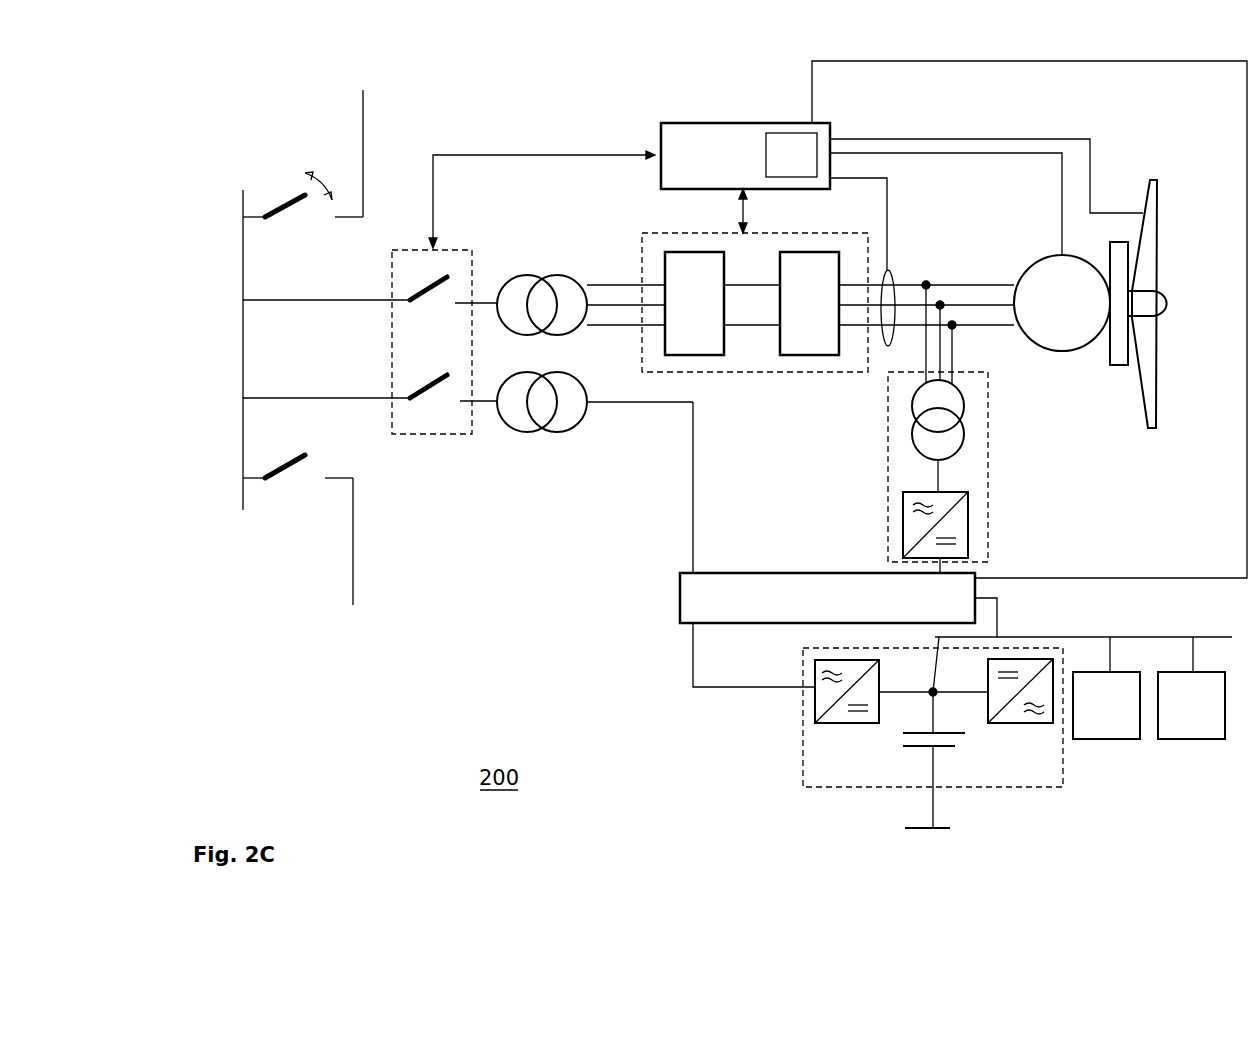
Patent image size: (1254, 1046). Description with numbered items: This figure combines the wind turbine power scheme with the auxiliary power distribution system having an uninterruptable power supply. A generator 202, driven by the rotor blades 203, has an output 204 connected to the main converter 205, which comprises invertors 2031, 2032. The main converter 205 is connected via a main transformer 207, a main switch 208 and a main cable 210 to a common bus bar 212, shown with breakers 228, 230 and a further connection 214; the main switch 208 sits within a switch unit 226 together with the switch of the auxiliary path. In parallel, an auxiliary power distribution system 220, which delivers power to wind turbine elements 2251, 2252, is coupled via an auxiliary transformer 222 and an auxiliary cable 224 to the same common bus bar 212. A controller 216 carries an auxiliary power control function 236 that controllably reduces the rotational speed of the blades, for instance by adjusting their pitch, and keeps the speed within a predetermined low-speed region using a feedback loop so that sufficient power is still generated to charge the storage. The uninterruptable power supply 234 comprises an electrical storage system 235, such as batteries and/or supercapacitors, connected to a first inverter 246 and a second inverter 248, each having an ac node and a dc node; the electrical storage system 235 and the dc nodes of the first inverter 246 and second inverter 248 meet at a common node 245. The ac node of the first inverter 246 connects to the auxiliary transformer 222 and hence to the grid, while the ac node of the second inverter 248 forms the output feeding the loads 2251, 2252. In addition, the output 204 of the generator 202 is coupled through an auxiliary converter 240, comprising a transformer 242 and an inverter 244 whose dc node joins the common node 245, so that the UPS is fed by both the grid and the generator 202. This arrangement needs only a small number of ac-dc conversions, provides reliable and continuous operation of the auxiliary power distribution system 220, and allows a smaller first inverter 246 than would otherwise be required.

The generator 202 is at (1062, 303).
The propeller 203 is at (1163, 304).
The invertor 2031 is at (694, 303).
The invertor 2032 is at (781, 303).
The output 204 is at (920, 342).
The main converter 205 is at (755, 319).
The main transformer 207 is at (581, 288).
The main switch 208 is at (418, 280).
The main cable 210 is at (326, 315).
The bus bar 212 is at (210, 350).
The connection line 214 is at (362, 555).
The controller 216 is at (745, 156).
The auxiliary power distribution system 220 is at (838, 605).
The auxiliary transformer 222 is at (595, 472).
The auxiliary cable 224 is at (326, 383).
The wind turbine element 2251 is at (1106, 688).
The wind turbine element 2252 is at (1191, 688).
The switch unit 226 is at (432, 408).
The first breaker 228 is at (303, 153).
The second breaker 230 is at (277, 493).
The uninterruptable power supply 234 is at (803, 787).
The electrical storage system 235 is at (945, 760).
The auxiliary power control function 236 is at (795, 152).
The auxiliary converter 240 is at (888, 470).
The transformer 242 is at (972, 418).
The inverter 244 is at (905, 540).
The common node 245 is at (928, 698).
The first inverter 246 is at (815, 660).
The second inverter 248 is at (1048, 655).